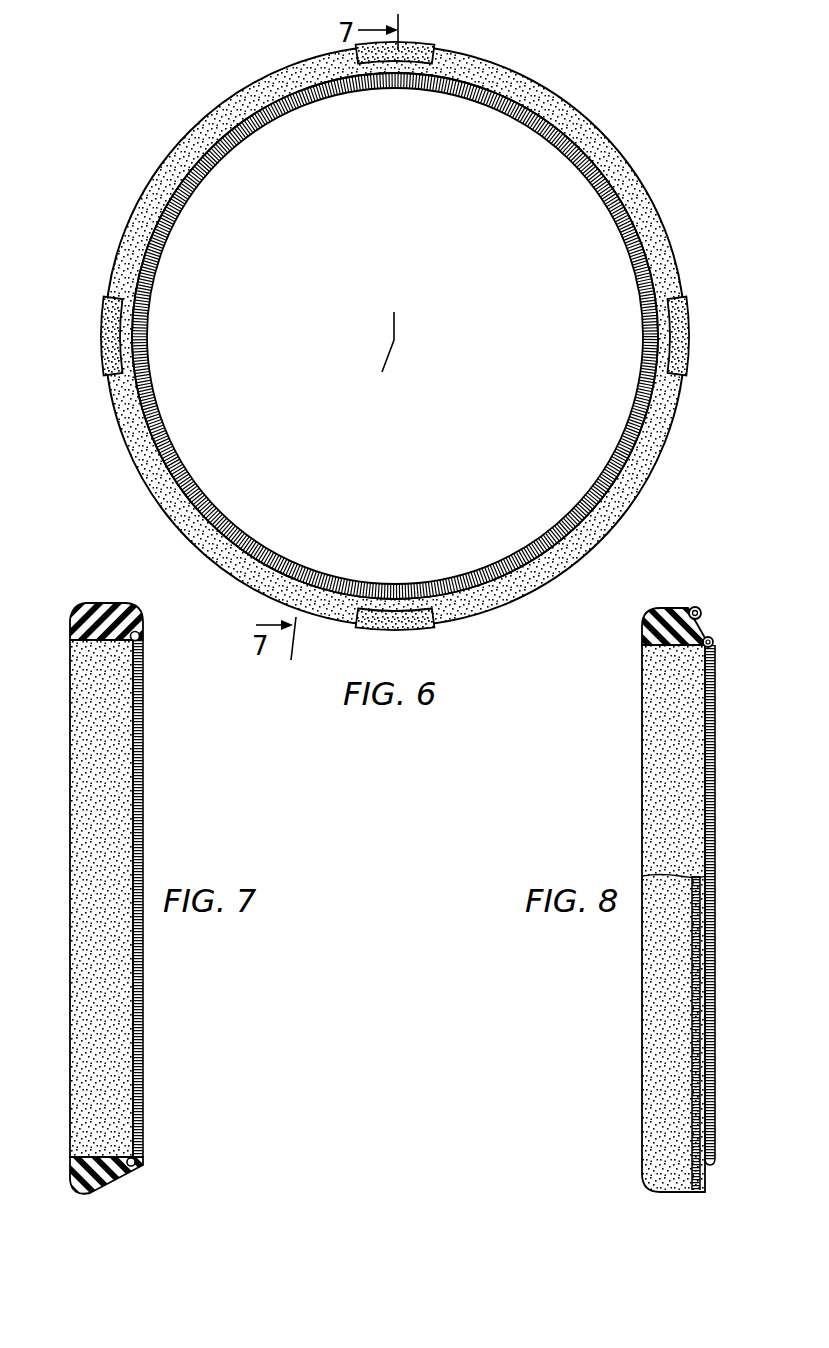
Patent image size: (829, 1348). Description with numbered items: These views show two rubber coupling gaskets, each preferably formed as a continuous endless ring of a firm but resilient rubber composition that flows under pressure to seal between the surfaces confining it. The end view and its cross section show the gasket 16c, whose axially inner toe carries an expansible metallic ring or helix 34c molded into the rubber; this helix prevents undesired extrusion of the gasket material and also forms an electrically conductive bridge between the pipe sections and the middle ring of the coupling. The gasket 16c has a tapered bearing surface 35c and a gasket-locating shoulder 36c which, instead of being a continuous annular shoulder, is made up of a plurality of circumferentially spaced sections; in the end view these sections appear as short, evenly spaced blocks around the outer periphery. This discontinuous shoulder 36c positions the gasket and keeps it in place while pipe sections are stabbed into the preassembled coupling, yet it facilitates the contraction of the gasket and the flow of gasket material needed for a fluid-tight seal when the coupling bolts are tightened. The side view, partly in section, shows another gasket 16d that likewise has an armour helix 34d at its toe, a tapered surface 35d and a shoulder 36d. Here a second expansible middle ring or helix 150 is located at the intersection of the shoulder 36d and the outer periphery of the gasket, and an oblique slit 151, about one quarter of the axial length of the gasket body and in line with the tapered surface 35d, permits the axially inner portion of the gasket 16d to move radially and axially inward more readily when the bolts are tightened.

In FIG. 6, the expansible metallic ring or helix 34c is at (152, 412).
In FIG. 7, the expansible metallic ring or helix 34c is at (143, 722).
In FIG. 6, the tapered bearing surface 35c is at (193, 525).
In FIG. 7, the tapered bearing surface 35c is at (116, 1172).
In FIG. 6, the shoulder 36c is at (400, 55).
In FIG. 7, the shoulder 36c is at (118, 606).
In FIG. 7, the gasket 16c is at (82, 612).
In FIG. 8, the gasket 16d is at (648, 632).
In FIG. 8, the expansible metallic ring or helix 34d is at (713, 655).
In FIG. 8, the tapered surface 35d is at (713, 640).
In FIG. 8, the shoulder 36d is at (703, 622).
In FIG. 8, the second expansible middle ring or helix 150 is at (701, 608).
In FIG. 8, the oblique slit 151 is at (688, 606).